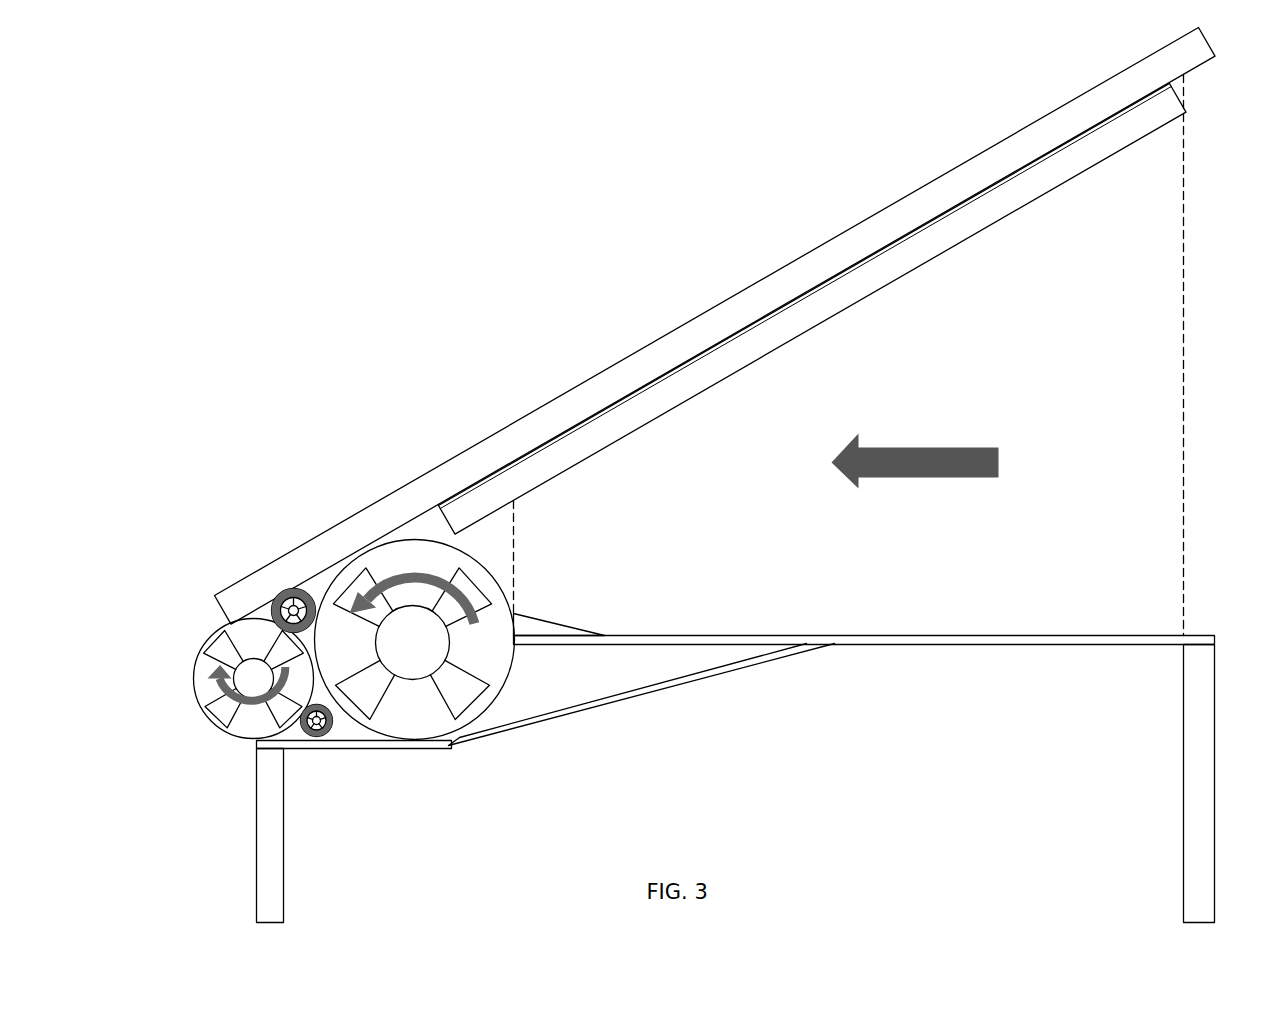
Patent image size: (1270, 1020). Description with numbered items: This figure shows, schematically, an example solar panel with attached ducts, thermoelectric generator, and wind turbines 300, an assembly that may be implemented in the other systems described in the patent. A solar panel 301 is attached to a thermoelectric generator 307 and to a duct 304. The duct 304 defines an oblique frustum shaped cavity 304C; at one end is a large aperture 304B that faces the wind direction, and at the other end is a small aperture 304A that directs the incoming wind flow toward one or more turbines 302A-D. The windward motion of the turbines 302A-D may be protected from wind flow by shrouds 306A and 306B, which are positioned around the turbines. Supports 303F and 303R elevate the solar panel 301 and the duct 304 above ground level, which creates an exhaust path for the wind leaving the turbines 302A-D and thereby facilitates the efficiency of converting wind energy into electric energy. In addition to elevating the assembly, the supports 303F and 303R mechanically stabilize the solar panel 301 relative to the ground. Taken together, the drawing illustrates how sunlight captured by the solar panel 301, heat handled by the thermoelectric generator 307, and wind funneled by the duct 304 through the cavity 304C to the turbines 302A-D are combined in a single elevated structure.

The solar panel with attached ducts, thermoelectric generator, and wind turbines 300 is at (469, 156).
The solar panel 301 is at (737, 307).
The thermoelectric generator 307 is at (1050, 168).
The duct 304 is at (864, 628).
The small aperture 304A is at (547, 557).
The large aperture 304B is at (1216, 355).
The oblique frustum shaped cavity 304C is at (942, 429).
The turbines 302A-D is at (304, 640).
The support 303F is at (302, 836).
The support 303R is at (1157, 784).
The shroud 306A is at (642, 695).
The shroud 306B is at (354, 765).